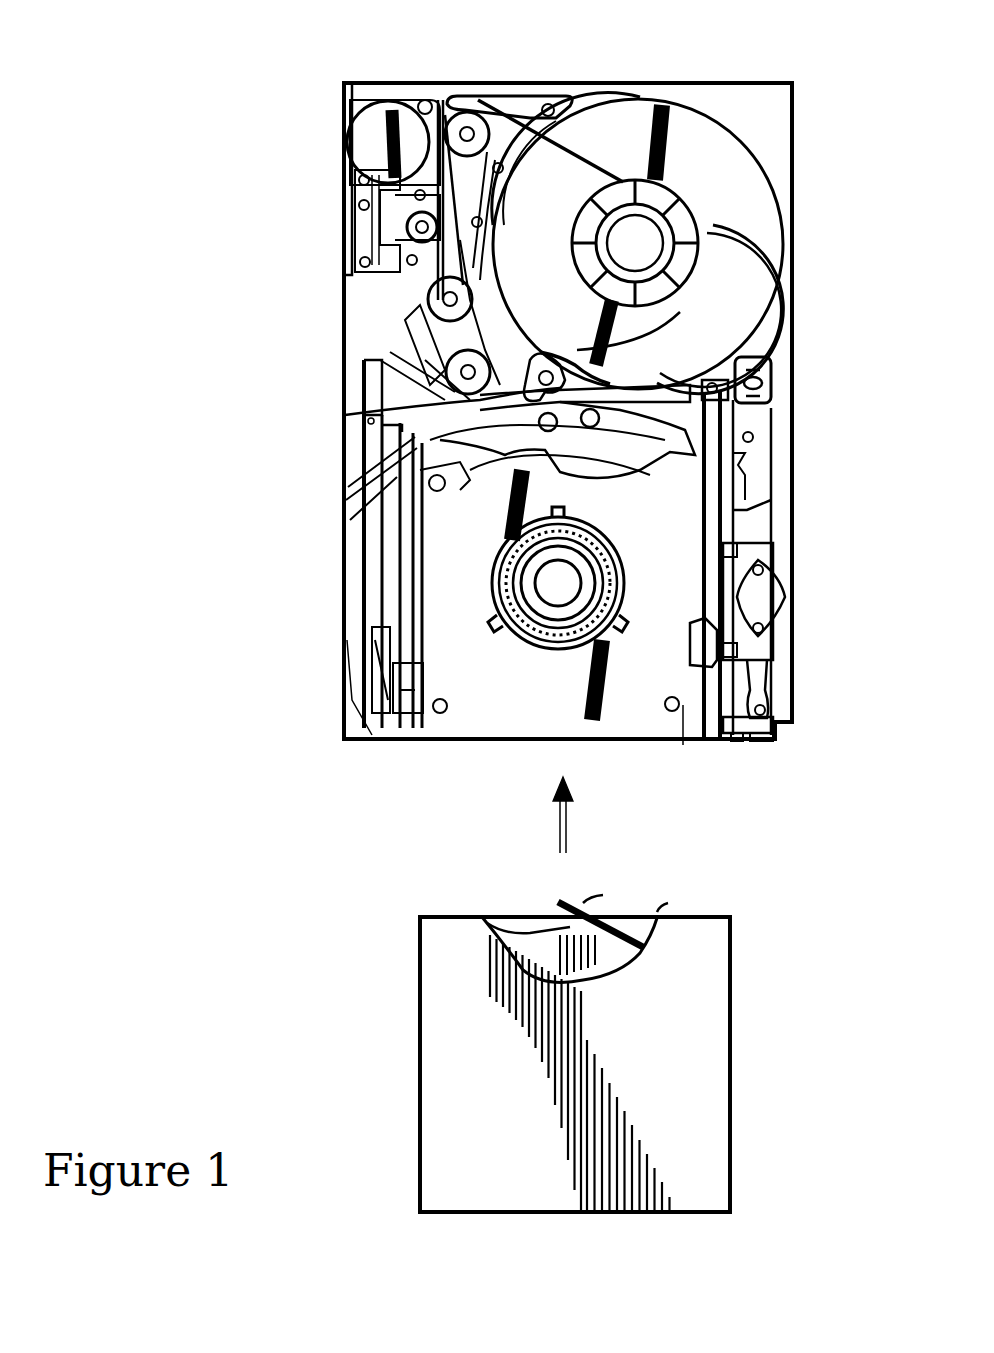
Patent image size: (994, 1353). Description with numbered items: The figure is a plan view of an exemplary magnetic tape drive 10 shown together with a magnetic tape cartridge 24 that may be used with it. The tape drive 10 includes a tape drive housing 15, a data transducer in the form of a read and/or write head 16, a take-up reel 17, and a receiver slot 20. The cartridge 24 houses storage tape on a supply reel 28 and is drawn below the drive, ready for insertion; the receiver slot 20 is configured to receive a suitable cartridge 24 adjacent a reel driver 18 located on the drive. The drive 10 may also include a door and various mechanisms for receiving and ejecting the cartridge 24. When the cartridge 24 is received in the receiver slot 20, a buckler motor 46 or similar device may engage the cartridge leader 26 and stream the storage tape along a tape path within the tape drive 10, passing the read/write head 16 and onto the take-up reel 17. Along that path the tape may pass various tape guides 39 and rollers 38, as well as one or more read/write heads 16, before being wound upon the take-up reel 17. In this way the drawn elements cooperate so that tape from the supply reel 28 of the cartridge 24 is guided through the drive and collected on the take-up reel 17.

The tape drive 10 is at (818, 364).
The tape drive housing 15 is at (795, 470).
The read/write head 16 is at (410, 230).
The take-up reel 17 is at (748, 200).
The reel driver 18 is at (495, 595).
The receiver slot 20 is at (683, 722).
The cartridge 24 is at (733, 1000).
The cartridge leader 26 is at (580, 905).
The supply reel 28 is at (545, 935).
The rollers 38 is at (450, 388).
The tape guides 39 is at (478, 92).
The buckler motor 46 is at (390, 456).